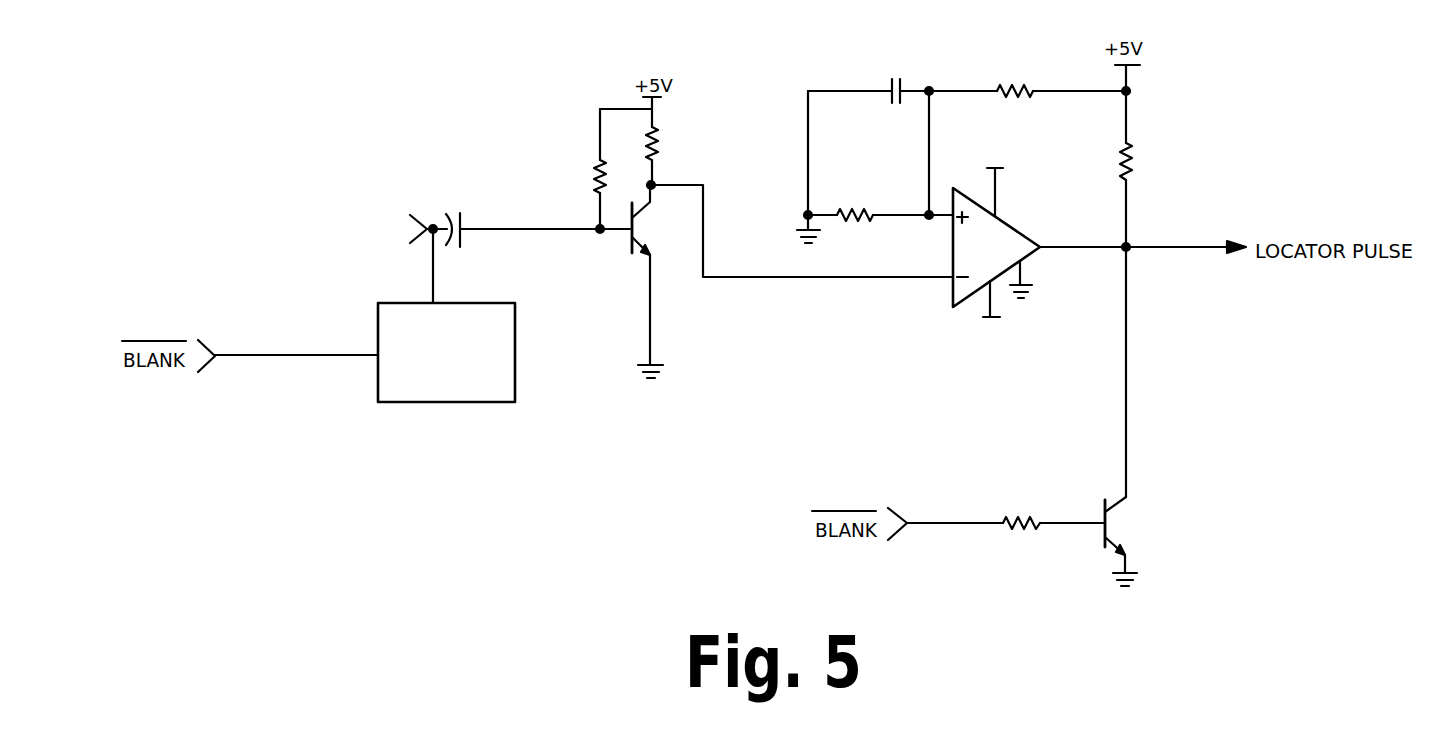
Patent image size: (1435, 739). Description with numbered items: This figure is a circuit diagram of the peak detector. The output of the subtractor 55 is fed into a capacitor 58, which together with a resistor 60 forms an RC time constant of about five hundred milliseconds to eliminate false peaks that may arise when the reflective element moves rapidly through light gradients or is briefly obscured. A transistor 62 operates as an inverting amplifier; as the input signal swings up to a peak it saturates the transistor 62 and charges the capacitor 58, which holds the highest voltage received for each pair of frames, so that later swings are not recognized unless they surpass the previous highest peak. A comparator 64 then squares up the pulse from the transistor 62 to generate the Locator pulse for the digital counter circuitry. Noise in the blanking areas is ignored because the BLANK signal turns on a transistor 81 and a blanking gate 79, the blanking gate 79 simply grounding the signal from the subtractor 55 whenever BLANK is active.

The subtractor 55 is at (306, 229).
The capacitor 58 is at (453, 208).
The resistor 60 is at (598, 173).
The transistor 62 is at (638, 250).
The comparator 64 is at (953, 297).
The blanking gate 79 is at (378, 319).
The transistor 81 is at (1102, 507).